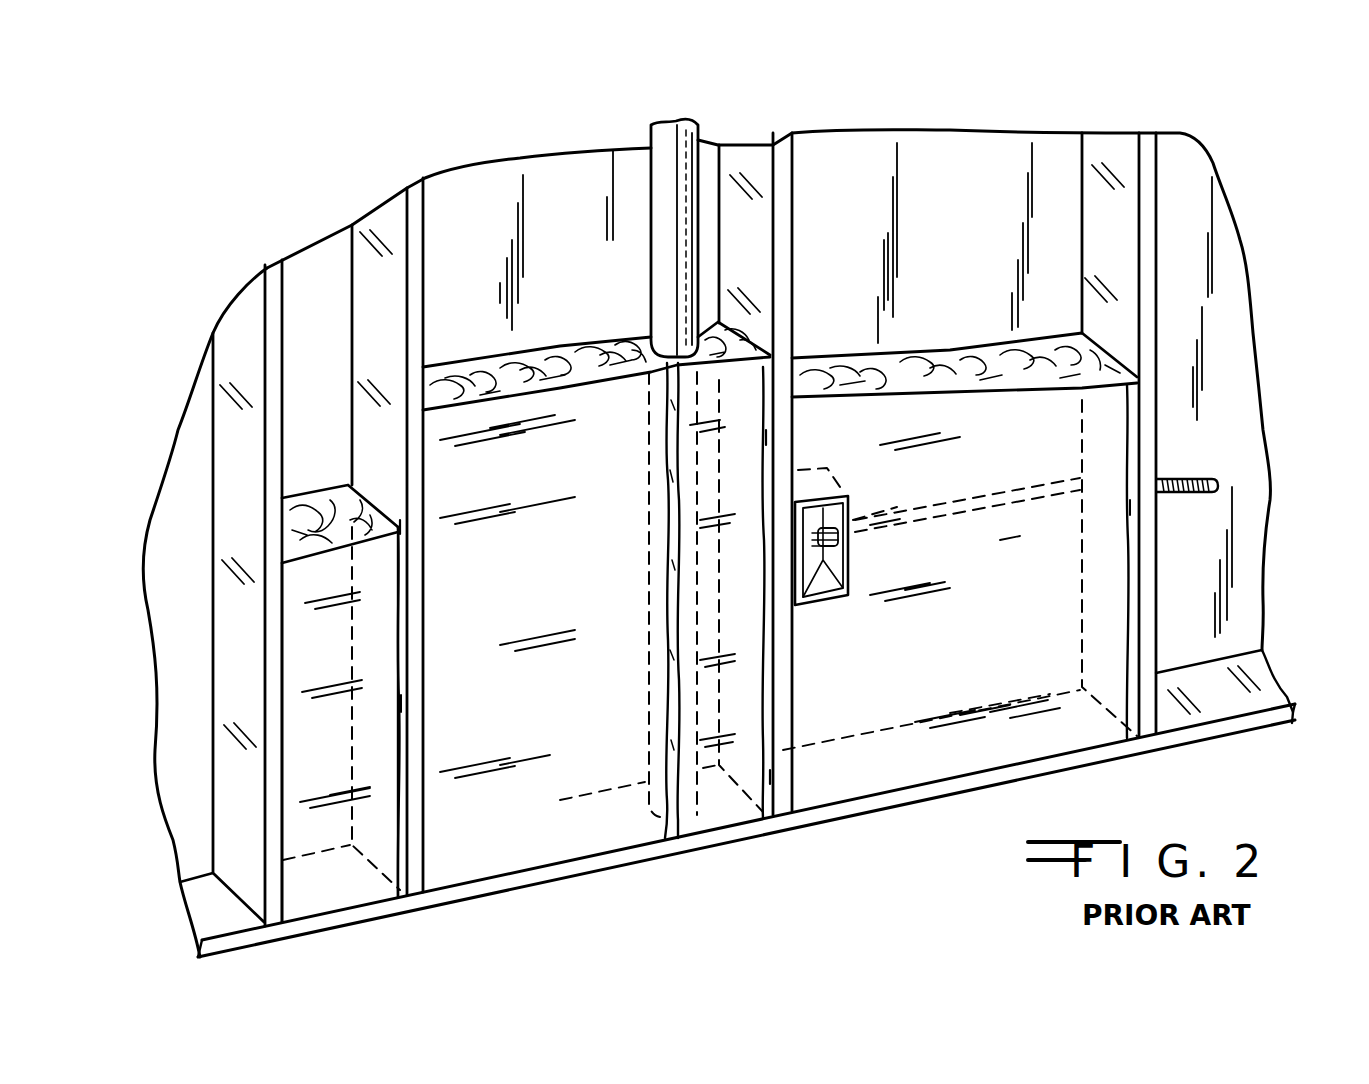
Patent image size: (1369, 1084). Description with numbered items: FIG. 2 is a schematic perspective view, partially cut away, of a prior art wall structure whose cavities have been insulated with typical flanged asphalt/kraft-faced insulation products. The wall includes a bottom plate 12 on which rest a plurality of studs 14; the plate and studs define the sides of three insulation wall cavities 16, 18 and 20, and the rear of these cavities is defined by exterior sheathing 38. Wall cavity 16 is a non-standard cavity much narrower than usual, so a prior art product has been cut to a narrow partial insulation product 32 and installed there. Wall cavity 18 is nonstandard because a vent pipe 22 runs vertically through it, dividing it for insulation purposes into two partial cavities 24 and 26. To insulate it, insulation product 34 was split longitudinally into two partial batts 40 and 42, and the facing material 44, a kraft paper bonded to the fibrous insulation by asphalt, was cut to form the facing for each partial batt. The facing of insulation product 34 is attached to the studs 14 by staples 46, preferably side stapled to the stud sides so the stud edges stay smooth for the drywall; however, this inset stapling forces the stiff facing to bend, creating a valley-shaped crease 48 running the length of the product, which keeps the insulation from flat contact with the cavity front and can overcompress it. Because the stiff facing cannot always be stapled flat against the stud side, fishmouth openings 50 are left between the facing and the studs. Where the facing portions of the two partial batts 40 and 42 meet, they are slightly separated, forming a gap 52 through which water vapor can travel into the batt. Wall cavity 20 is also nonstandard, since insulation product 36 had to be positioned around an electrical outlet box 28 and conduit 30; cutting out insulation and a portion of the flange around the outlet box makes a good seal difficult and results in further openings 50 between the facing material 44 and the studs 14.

The bottom plate 12 is at (1240, 652).
The studs 14 is at (368, 263).
The wall cavity 16 is at (298, 297).
The wall cavity 18 is at (486, 207).
The wall cavity 20 is at (1060, 185).
The vent pipe 22 is at (652, 152).
The partial cavity 24 is at (568, 190).
The partial cavity 26 is at (705, 190).
The electrical outlet box 28 is at (849, 520).
The conduit 30 is at (1218, 480).
The partial insulation product 32 is at (303, 492).
The insulation product 34 is at (572, 333).
The insulation product 36 is at (933, 348).
The exterior sheathing 38 is at (334, 360).
The partial batt 40 is at (475, 358).
The partial batt 42 is at (726, 336).
The facing material 44 is at (541, 574).
The staples 46 is at (402, 686).
The crease 48 is at (398, 527).
The openings 50 is at (401, 706).
The gap 52 is at (665, 820).